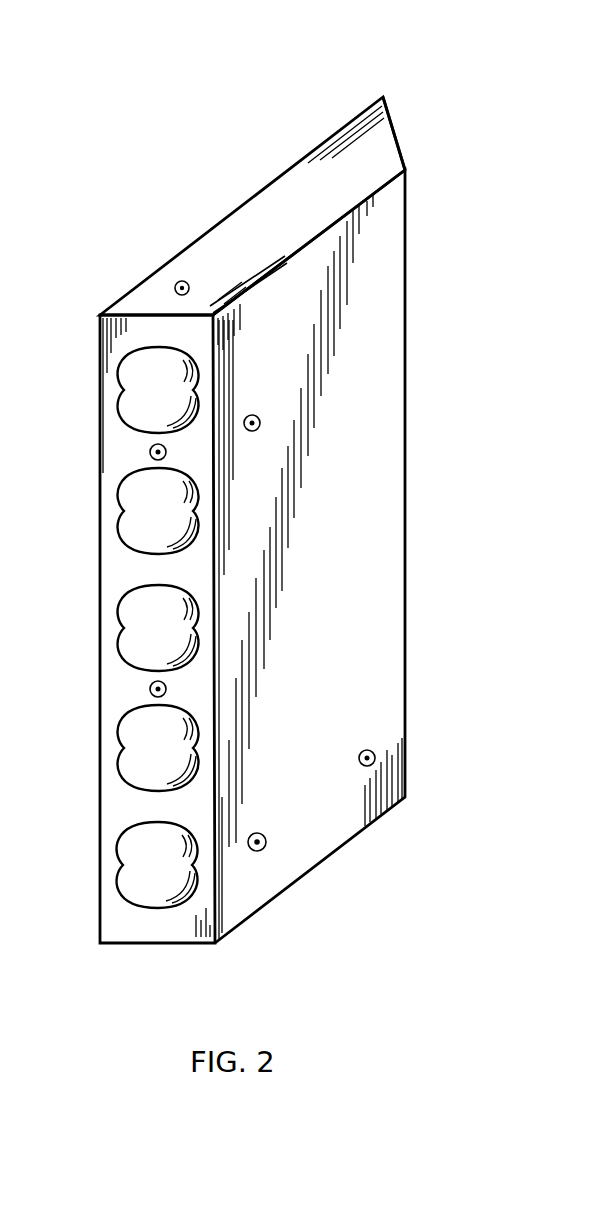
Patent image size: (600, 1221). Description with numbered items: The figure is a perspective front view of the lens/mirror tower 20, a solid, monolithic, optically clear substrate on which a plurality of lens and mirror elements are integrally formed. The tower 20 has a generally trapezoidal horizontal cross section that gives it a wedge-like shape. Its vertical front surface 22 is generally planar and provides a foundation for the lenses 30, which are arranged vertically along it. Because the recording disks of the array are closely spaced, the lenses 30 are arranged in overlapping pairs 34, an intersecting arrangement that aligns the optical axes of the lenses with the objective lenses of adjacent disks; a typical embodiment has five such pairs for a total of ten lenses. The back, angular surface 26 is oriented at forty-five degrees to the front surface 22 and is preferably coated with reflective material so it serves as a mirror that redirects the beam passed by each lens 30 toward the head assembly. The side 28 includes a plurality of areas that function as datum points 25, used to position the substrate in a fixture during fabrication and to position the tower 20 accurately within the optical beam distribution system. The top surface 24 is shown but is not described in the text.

The lens/mirror tower 20 is at (472, 89).
The front surface 22 is at (118, 362).
The top face 24 is at (210, 245).
The datum points 25 is at (257, 416).
The back angular surface 26 is at (397, 134).
The side 28 is at (396, 423).
The lenses 30 is at (132, 843).
The overlapping lens pairs 34 is at (119, 734).